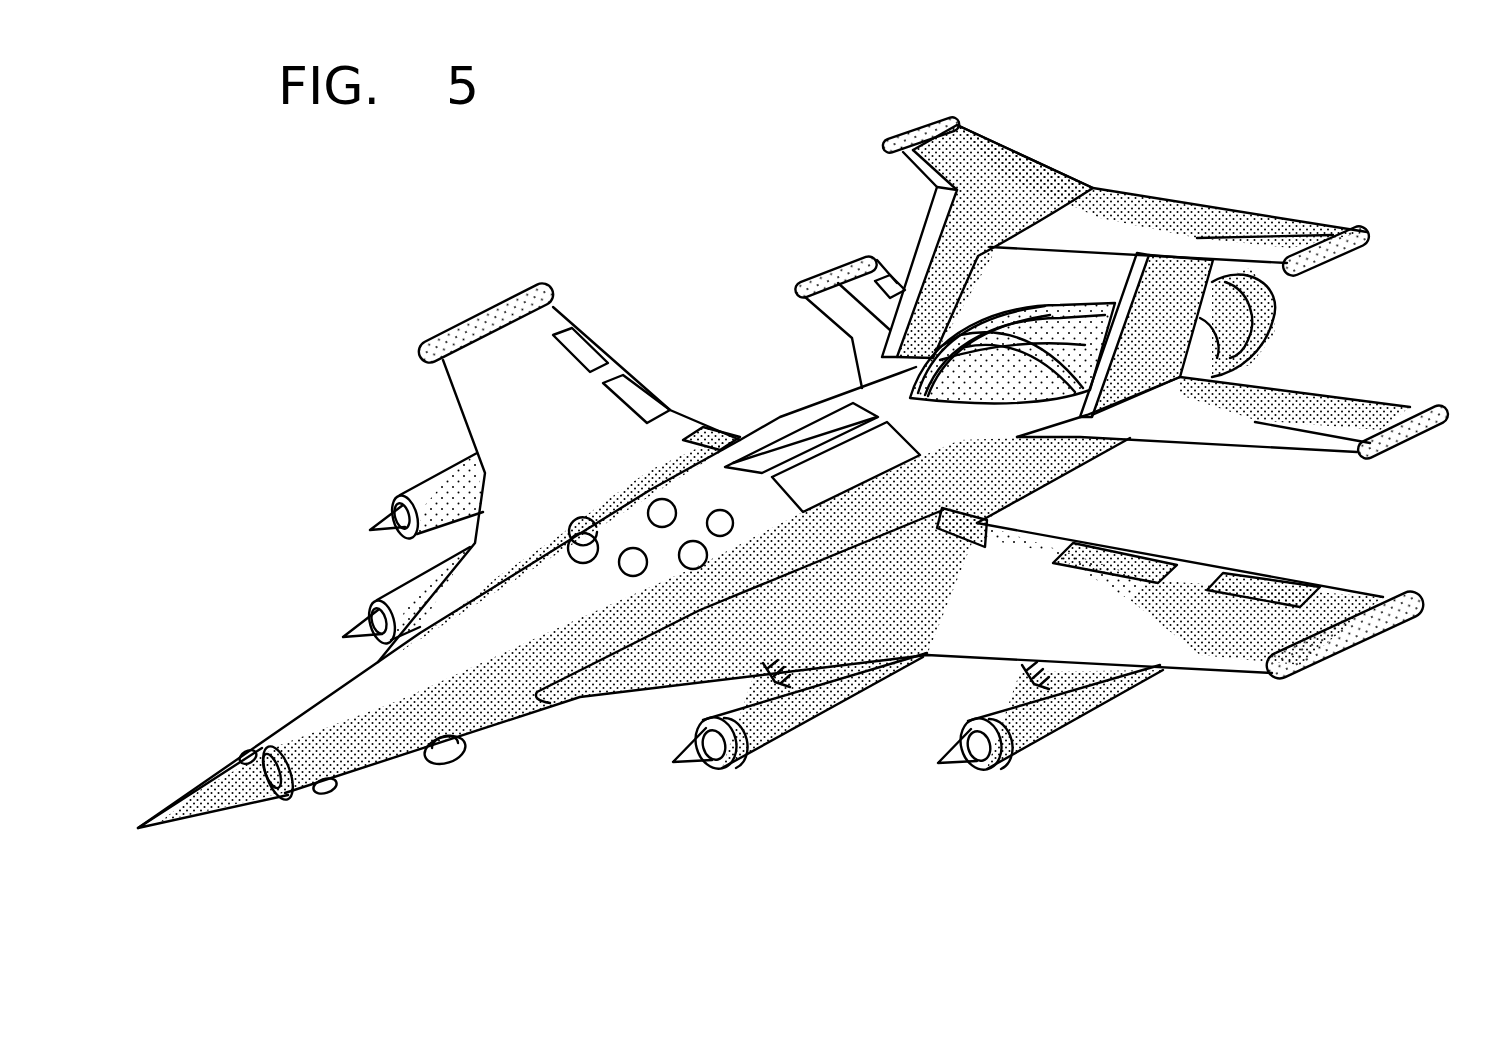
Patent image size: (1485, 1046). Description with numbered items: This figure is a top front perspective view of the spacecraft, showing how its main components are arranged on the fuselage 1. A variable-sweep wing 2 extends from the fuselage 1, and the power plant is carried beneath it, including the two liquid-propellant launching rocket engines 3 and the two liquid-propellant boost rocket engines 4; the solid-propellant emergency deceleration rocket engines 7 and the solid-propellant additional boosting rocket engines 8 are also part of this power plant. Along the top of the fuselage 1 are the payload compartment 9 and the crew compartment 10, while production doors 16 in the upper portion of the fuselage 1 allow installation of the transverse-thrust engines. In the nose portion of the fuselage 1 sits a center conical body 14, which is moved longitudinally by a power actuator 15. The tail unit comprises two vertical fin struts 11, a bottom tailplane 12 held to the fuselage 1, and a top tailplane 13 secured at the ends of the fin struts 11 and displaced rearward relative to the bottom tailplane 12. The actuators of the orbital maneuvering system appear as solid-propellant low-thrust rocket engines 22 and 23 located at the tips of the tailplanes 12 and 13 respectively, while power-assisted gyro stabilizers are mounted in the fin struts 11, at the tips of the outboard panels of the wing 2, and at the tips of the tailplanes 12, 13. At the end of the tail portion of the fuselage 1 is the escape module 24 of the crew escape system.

The fuselage 1 is at (747, 631).
The variable-sweep wing 2 is at (650, 675).
The liquid-propellant launching rocket engine 3 is at (775, 718).
The liquid-propellant boost rocket engine 4 is at (1025, 715).
The solid-propellant emergency deceleration rocket engine 7 is at (923, 492).
The solid-propellant additional boosting rocket engine 8 is at (535, 292).
The payload compartment 9 is at (775, 447).
The crew compartment 10 is at (1030, 340).
The vertical fin strut 11 is at (930, 228).
The bottom tailplane 12 is at (882, 262).
The top tailplane 13 is at (1212, 228).
The center conical body 14 is at (203, 795).
The power actuator 15 is at (252, 755).
The production doors 16 is at (660, 505).
The solid-propellant low-thrust rocket engine 22 is at (1069, 202).
The solid-propellant low-thrust rocket engine 23 is at (945, 122).
The escape module 24 is at (1250, 343).